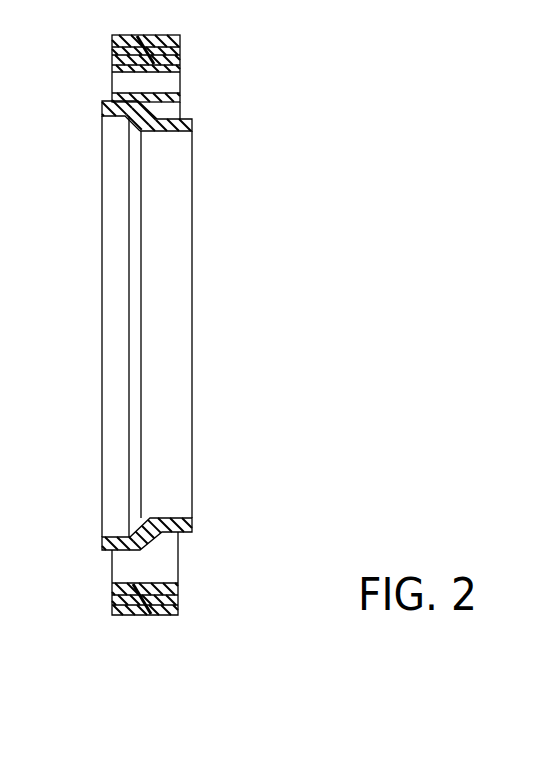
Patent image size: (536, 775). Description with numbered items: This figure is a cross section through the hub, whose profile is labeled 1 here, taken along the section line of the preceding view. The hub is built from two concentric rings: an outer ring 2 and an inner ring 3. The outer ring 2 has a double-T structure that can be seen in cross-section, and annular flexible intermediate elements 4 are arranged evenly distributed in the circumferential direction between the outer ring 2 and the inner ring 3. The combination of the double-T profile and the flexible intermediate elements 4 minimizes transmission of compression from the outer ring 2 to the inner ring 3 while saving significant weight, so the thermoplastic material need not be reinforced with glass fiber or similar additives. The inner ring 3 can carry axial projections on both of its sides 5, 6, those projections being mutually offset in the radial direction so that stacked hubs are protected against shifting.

The first sealing ring 1 is at (118, 37).
The outer ring 2 is at (178, 607).
The inner ring 3 is at (192, 530).
The annular flexible intermediate element 4 is at (180, 72).
The side of the inner ring 5 is at (102, 110).
The side of the inner ring 6 is at (192, 121).